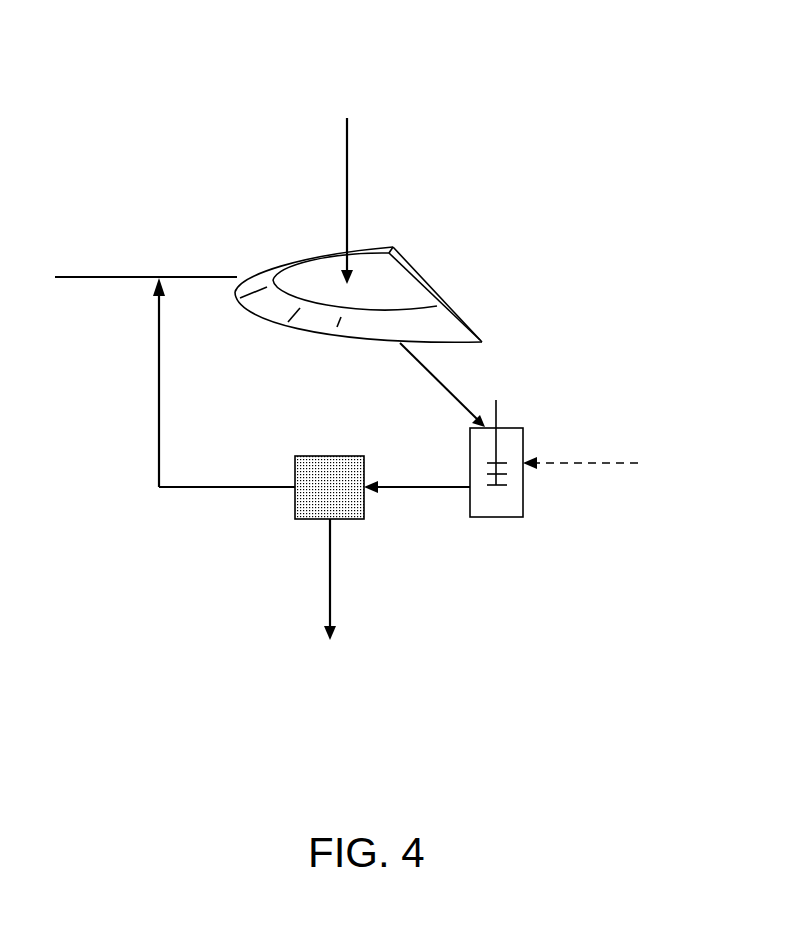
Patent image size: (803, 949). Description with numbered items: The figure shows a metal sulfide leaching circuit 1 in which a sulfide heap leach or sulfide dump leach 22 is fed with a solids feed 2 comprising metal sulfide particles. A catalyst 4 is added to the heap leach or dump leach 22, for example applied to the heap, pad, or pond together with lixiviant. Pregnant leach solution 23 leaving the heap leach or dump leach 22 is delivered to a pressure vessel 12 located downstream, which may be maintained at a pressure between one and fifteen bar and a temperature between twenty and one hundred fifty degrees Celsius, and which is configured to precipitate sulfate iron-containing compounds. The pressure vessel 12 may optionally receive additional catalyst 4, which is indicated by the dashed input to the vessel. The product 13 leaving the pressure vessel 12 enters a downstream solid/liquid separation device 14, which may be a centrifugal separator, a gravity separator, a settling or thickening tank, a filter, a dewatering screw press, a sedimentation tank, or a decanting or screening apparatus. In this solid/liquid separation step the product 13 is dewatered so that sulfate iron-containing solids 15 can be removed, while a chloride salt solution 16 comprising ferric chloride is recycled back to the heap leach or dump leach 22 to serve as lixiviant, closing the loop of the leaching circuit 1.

The metal sulfide leaching circuit 1 is at (480, 73).
The solids feed 2 is at (100, 277).
The catalyst 4 is at (347, 199).
The pressure vessel 12 is at (523, 511).
The product 13 is at (427, 486).
The solid/liquid separation device 14 is at (295, 470).
The sulfate iron-containing solids 15 is at (328, 563).
The chloride salt solution 16 is at (158, 408).
The sulfide heap leach or sulfide dump leach 22 is at (320, 323).
The pregnant leach solution 23 is at (444, 382).